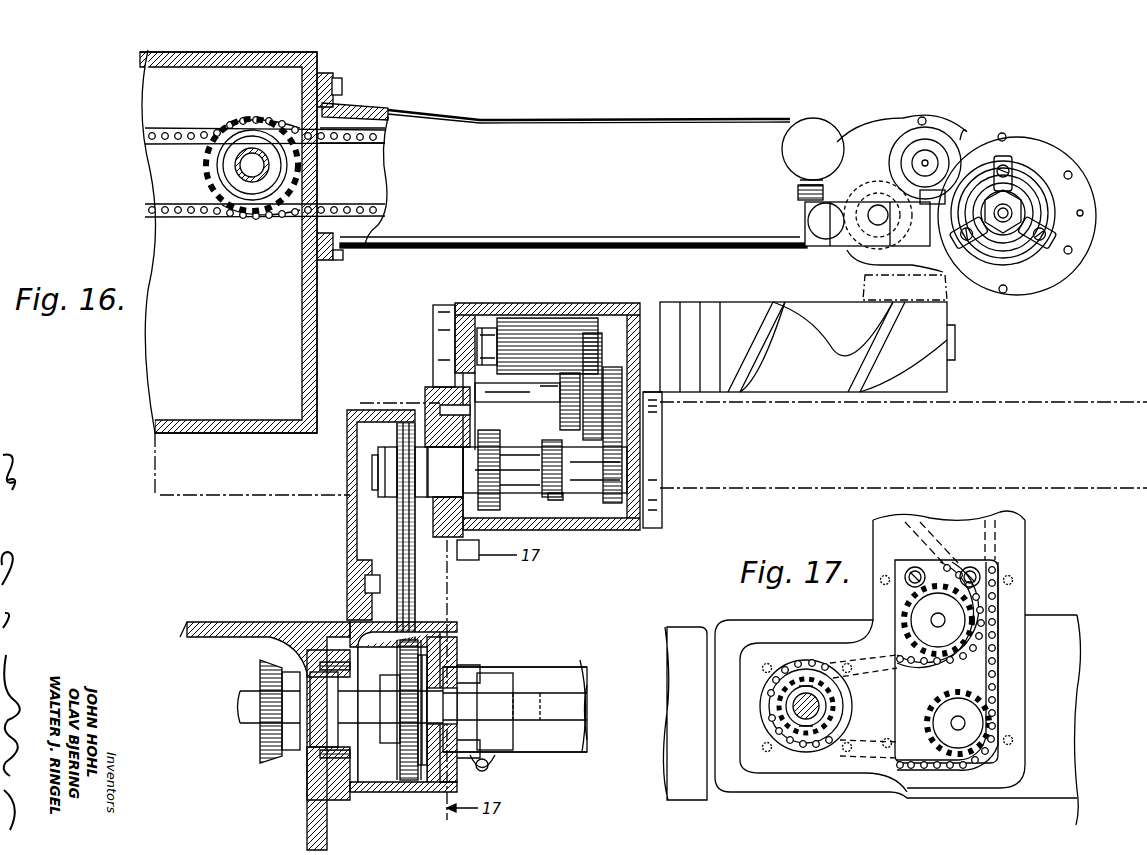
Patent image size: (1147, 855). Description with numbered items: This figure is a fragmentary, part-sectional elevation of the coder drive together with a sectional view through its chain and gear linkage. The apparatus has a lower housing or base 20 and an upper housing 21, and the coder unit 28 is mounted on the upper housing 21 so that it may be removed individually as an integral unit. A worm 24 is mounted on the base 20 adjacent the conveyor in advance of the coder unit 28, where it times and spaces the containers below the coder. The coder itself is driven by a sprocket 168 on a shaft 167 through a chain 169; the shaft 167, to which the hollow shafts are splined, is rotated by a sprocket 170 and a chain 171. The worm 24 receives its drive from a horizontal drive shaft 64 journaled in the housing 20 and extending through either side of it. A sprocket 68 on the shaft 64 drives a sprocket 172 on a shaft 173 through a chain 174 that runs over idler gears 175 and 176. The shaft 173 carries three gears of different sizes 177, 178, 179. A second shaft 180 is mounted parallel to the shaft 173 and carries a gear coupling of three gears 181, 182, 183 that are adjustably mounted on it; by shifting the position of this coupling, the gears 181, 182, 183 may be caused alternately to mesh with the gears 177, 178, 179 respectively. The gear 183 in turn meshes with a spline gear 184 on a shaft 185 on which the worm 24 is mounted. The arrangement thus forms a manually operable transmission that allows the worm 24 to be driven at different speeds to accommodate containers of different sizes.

In FIG. 16, the lower housing or base 20 is at (292, 623).
In FIG. 17, the lower housing or base 20 is at (690, 628).
In FIG. 16, the upper housing 21 is at (318, 318).
In FIG. 16, the worm 24 is at (740, 315).
In FIG. 16, the coder unit 28 is at (975, 128).
In FIG. 16, the horizontal drive shaft 64 is at (250, 715).
In FIG. 17, the horizontal drive shaft 64 is at (807, 712).
In FIG. 16, the sprocket 68 is at (408, 668).
In FIG. 17, the sprocket 68 is at (847, 678).
In FIG. 16, the shaft 167 is at (240, 168).
In FIG. 16, the sprocket 168 is at (218, 152).
In FIG. 16, the chain 169 is at (240, 124).
In FIG. 16, the sprocket 170 is at (290, 178).
In FIG. 16, the chain 171 is at (338, 136).
In FIG. 16, the sprocket 172 is at (394, 450).
In FIG. 16, the shaft 173 is at (378, 465).
In FIG. 16, the chain 174 is at (395, 538).
In FIG. 17, the chain 174 is at (993, 648).
In FIG. 17, the idler gear 175 is at (968, 722).
In FIG. 16, the idler gear 176 is at (415, 595).
In FIG. 17, the idler gear 176 is at (925, 610).
In FIG. 16, the gear 177 is at (500, 505).
In FIG. 16, the gear 178 is at (557, 500).
In FIG. 16, the gear 179 is at (613, 503).
In FIG. 16, the second shaft 180 is at (517, 393).
In FIG. 16, the gear 181 is at (566, 414).
In FIG. 16, the gear 182 is at (598, 410).
In FIG. 16, the gear 183 is at (615, 425).
In FIG. 16, the spline gear 184 is at (543, 322).
In FIG. 16, the shaft 185 is at (488, 347).